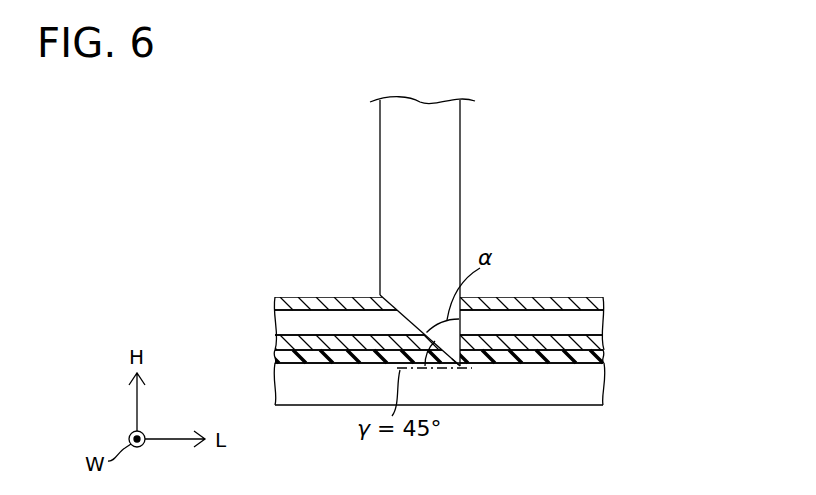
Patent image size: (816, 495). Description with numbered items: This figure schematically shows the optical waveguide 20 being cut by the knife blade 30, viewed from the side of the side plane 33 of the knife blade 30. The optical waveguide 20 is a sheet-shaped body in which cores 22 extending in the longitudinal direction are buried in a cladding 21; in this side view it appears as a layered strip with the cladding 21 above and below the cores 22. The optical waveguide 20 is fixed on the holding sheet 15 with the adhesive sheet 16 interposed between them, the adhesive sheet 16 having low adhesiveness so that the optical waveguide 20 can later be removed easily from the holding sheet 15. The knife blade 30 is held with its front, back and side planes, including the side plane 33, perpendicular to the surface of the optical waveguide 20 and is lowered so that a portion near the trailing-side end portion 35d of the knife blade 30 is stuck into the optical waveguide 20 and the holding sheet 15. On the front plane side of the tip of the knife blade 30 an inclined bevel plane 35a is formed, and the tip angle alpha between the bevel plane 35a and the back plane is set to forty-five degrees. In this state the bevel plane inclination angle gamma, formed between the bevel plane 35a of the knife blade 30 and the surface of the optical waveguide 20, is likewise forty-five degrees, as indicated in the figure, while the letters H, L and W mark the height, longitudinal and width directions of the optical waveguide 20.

The knife blade 30 is at (437, 279).
The side plane 33 is at (403, 210).
The bevel plane 35a is at (395, 316).
The trailing-side end portion 35d is at (459, 370).
The optical waveguide 20 is at (492, 320).
The cladding 21 is at (600, 300).
The cores 22 is at (595, 325).
The adhesive sheet 16 is at (600, 358).
The holding sheet 15 is at (598, 386).